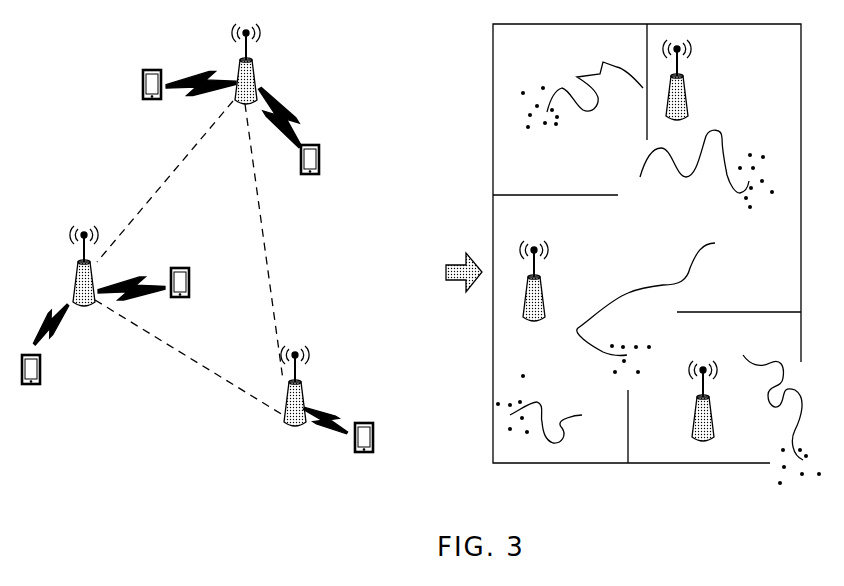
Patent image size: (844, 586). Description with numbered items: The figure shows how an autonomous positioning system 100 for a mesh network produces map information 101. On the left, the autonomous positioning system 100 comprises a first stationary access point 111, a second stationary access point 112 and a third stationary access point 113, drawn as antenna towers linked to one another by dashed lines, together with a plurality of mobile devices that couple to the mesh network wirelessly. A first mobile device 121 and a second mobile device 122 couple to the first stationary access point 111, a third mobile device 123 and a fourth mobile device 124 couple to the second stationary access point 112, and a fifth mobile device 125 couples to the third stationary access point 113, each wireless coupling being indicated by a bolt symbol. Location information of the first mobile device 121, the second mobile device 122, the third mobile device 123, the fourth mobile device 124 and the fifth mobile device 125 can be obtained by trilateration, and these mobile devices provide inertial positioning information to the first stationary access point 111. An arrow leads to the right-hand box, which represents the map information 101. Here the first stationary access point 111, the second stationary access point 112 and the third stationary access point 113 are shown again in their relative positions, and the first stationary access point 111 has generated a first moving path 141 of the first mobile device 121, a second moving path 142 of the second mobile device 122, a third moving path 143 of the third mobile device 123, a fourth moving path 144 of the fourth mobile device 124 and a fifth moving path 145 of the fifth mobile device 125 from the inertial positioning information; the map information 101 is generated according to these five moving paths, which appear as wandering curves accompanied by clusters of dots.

The autonomous positioning system 100 is at (189, 301).
The map information 101 is at (647, 261).
The first stationary access point 111 is at (258, 80).
The second stationary access point 112 is at (76, 284).
The third stationary access point 113 is at (283, 420).
The first mobile device 121 is at (143, 87).
The second mobile device 122 is at (319, 160).
The third mobile device 123 is at (40, 372).
The fourth mobile device 124 is at (189, 282).
The fifth mobile device 125 is at (373, 438).
The first moving path 141 is at (593, 65).
The second moving path 142 is at (723, 138).
The third moving path 143 is at (547, 403).
The fourth moving path 144 is at (688, 275).
The fifth moving path 145 is at (773, 405).